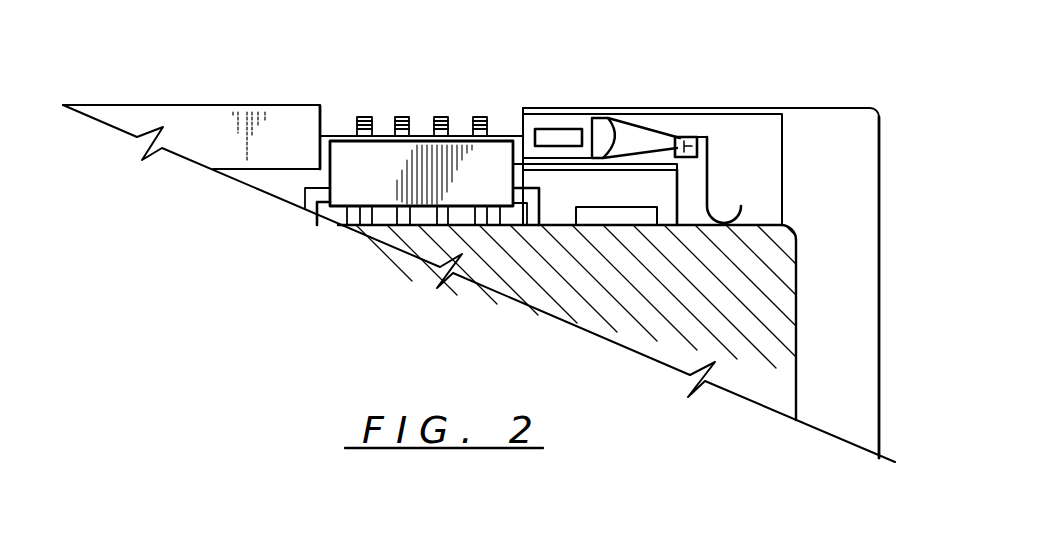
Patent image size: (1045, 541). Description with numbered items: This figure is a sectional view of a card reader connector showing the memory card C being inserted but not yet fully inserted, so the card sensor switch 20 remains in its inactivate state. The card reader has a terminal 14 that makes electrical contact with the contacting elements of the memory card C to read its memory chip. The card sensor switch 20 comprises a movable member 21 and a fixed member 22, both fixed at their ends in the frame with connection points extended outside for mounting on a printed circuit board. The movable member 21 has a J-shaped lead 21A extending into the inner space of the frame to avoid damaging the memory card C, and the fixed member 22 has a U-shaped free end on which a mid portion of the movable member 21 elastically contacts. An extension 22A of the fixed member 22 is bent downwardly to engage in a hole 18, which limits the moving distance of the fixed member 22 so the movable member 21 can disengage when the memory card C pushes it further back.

The terminal 14 is at (479, 117).
The card sensor switch 20 is at (692, 72).
The movable member 21 is at (653, 128).
The fixed member 22 is at (620, 130).
The extension 22A is at (705, 137).
The lead 21A is at (742, 210).
The hole 18 is at (698, 152).
The memory card C is at (553, 292).